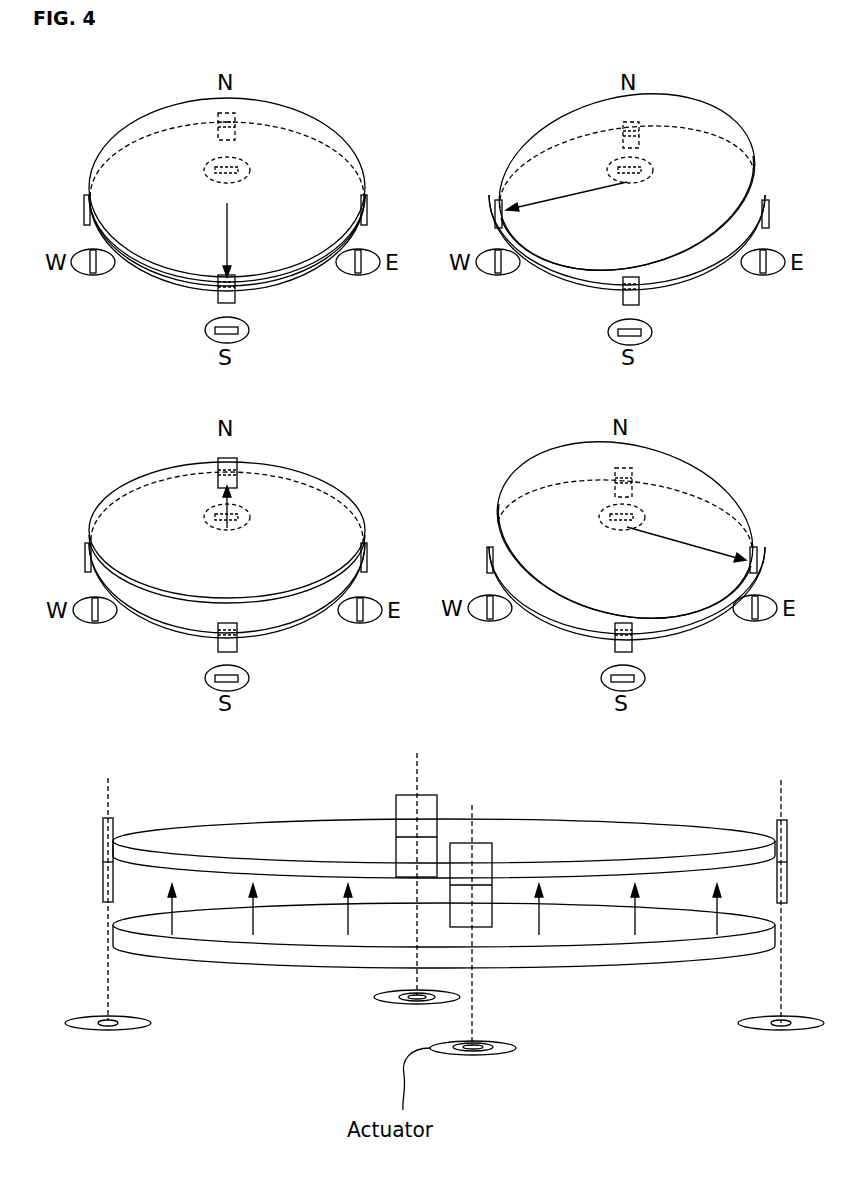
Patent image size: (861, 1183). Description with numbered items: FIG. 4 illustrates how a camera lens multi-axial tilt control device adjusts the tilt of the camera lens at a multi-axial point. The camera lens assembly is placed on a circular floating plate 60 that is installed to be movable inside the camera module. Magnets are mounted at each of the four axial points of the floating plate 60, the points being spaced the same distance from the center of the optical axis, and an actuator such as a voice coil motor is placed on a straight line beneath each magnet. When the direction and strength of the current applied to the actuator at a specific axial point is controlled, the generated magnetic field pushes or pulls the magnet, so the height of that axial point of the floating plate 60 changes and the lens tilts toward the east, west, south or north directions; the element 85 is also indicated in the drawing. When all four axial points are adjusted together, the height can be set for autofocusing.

The floating plate 60 is at (157, 117).
The sensor 85 is at (205, 327).